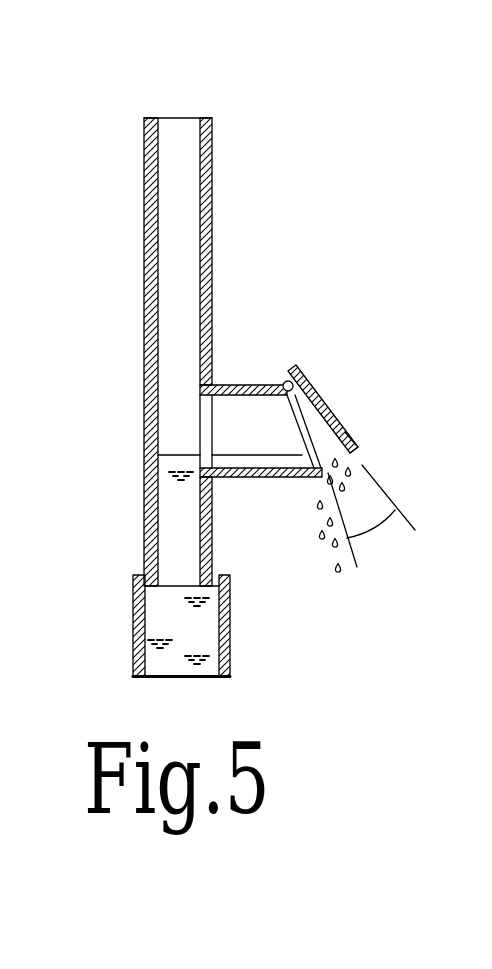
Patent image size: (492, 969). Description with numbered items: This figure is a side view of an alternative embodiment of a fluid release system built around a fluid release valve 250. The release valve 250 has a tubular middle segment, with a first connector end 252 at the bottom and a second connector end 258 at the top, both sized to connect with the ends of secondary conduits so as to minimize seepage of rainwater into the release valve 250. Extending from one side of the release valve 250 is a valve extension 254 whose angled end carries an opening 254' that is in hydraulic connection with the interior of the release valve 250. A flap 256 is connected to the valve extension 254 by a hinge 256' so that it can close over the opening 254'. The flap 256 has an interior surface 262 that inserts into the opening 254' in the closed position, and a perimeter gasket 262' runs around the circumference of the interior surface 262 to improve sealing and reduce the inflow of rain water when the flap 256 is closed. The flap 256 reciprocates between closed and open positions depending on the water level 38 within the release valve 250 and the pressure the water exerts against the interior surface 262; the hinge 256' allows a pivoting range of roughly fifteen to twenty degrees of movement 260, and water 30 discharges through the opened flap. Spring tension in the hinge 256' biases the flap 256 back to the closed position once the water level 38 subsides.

The fluid release valve 250 is at (252, 104).
The first connector end 252 is at (133, 633).
The valve extension 254 is at (260, 383).
The opening 254' is at (261, 480).
The flap 256 is at (345, 377).
The hinge 256' is at (329, 324).
The second connector end 258 is at (147, 168).
The movement 260 is at (375, 528).
The interior surface 262 is at (400, 424).
The perimeter gasket 262' is at (416, 461).
The liquid droplets 30 is at (323, 537).
The water level 38 is at (178, 455).